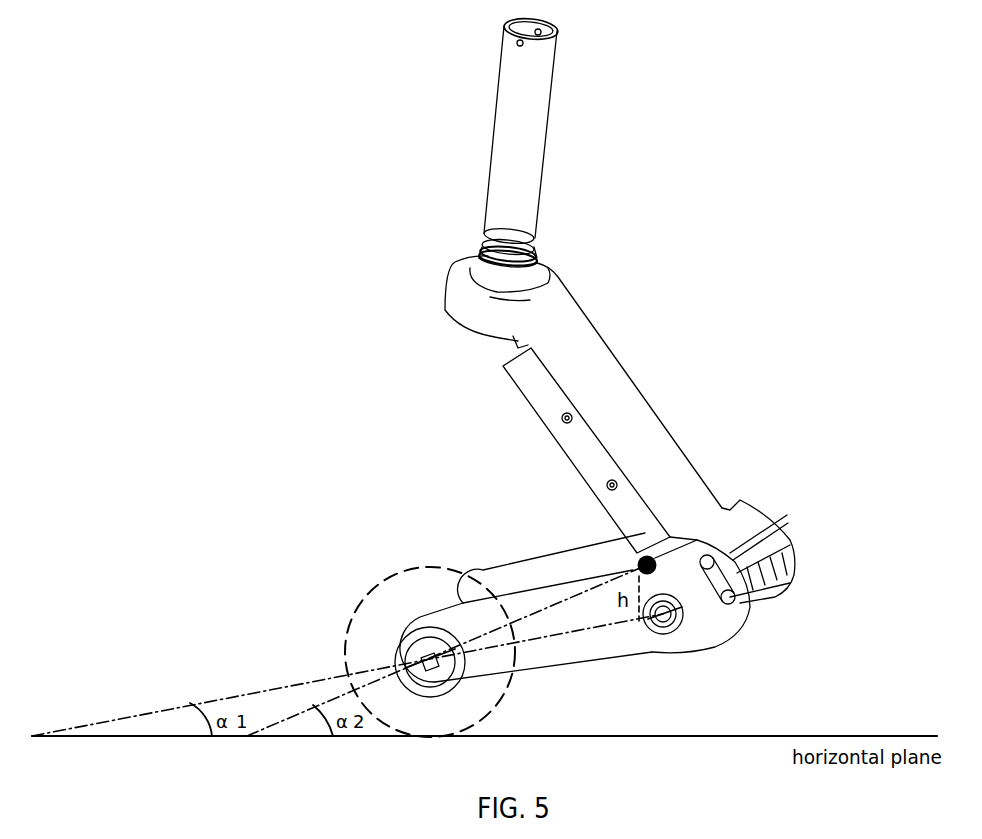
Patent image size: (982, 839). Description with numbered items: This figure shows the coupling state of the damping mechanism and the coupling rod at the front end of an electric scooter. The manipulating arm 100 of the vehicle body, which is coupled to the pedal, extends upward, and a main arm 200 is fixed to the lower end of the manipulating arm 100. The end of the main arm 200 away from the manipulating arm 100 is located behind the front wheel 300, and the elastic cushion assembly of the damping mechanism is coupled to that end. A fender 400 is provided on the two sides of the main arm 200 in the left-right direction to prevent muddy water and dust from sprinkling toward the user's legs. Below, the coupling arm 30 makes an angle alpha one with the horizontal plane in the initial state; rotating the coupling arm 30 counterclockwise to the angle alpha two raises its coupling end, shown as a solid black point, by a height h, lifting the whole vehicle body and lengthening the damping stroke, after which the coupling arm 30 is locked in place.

The manipulating arm 100 is at (530, 160).
The main arm 200 is at (675, 482).
The front wheel 300 is at (388, 578).
The coupling arm 30 is at (560, 580).
The fender 400 is at (568, 455).